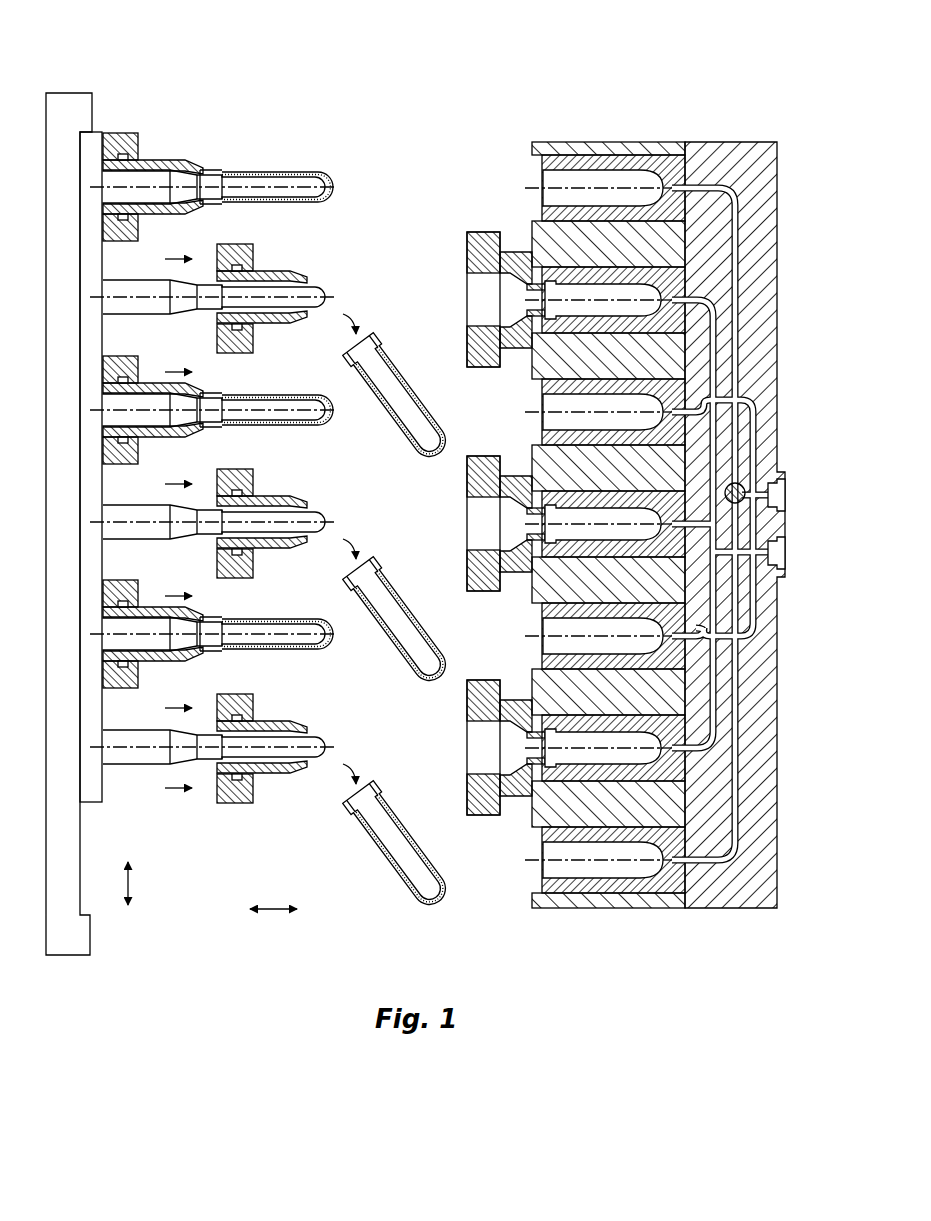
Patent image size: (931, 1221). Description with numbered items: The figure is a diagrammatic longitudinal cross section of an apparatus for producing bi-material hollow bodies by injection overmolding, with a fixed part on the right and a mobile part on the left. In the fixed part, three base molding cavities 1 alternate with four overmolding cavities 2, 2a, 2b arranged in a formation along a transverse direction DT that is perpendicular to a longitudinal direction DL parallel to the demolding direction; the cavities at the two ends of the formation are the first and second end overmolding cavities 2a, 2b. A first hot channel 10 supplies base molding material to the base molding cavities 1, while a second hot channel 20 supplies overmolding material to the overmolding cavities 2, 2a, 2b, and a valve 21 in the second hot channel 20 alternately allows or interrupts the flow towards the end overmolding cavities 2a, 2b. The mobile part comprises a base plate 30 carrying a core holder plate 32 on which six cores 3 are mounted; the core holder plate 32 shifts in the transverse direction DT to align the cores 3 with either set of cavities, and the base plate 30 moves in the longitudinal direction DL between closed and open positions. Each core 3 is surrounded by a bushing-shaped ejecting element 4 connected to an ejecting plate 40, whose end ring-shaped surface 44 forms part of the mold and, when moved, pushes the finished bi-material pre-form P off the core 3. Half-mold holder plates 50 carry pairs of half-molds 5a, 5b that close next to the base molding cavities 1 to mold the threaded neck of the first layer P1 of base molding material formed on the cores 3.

The base plate 30 is at (69, 108).
The core holder plate 32 is at (100, 783).
The ejecting plate 40 is at (137, 140).
The end ring-shaped surface 44 is at (206, 166).
The ejecting element 4 is at (177, 215).
The core 3 is at (282, 178).
The first layer P1 is at (322, 182).
The bi-material pre-form P is at (412, 385).
The half-mold holder plate 50 is at (475, 242).
The half-mold 5a is at (520, 260).
The half-mold 5b is at (515, 352).
The base molding cavity 1 is at (615, 318).
The overmolding cavity 2 is at (612, 432).
The first end overmolding cavity 2a is at (605, 170).
The second end overmolding cavity 2b is at (605, 878).
The valve 21 is at (744, 488).
The second hot channel 20 is at (786, 492).
The first hot channel 10 is at (786, 556).
The transverse direction DT is at (133, 882).
The longitudinal direction DL is at (272, 905).